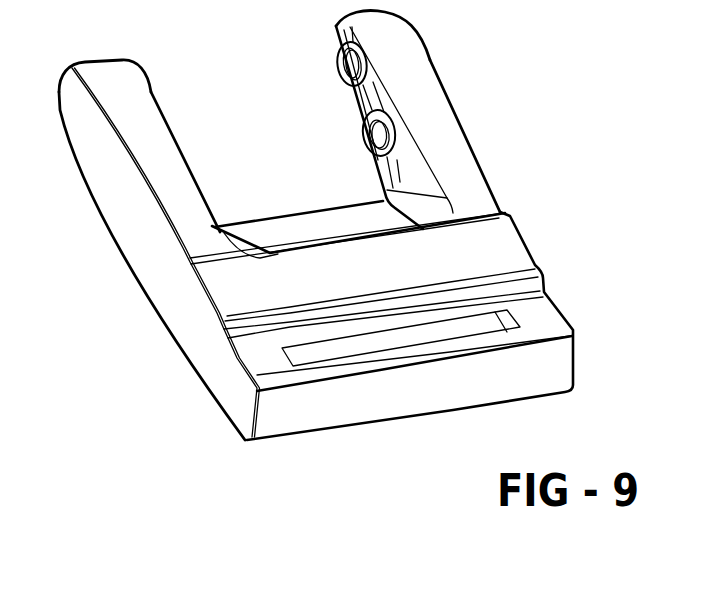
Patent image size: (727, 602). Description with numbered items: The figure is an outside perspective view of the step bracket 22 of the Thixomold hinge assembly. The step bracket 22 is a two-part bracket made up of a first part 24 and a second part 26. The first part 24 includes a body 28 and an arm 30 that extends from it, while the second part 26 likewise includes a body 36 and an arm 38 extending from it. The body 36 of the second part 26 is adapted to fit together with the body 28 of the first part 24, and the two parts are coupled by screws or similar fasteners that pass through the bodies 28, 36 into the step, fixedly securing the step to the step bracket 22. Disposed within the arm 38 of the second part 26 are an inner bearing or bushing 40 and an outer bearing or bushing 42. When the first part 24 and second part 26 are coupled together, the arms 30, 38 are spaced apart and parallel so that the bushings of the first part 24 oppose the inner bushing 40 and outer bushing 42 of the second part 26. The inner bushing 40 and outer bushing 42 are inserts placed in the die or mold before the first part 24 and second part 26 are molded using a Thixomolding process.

The step bracket 22 is at (387, 423).
The first part 24 is at (112, 236).
The second part 26 is at (472, 135).
The body 28 is at (543, 313).
The arm 30 is at (143, 117).
The body 36 is at (303, 230).
The arm 38 is at (412, 57).
The inner bearing or bushing 40 is at (341, 88).
The outer bearing or bushing 42 is at (358, 127).